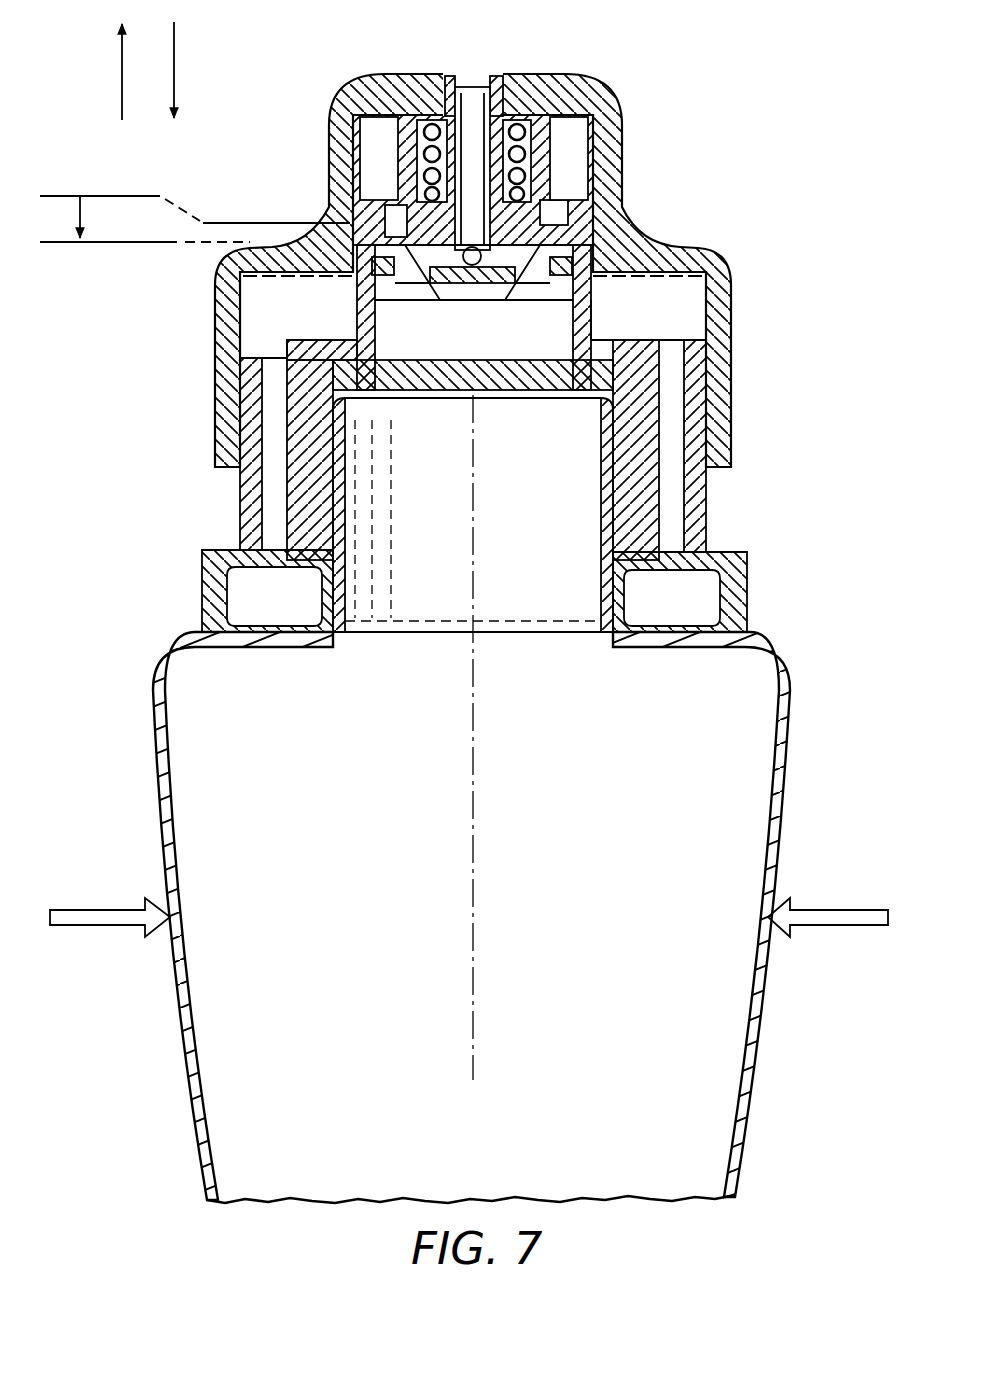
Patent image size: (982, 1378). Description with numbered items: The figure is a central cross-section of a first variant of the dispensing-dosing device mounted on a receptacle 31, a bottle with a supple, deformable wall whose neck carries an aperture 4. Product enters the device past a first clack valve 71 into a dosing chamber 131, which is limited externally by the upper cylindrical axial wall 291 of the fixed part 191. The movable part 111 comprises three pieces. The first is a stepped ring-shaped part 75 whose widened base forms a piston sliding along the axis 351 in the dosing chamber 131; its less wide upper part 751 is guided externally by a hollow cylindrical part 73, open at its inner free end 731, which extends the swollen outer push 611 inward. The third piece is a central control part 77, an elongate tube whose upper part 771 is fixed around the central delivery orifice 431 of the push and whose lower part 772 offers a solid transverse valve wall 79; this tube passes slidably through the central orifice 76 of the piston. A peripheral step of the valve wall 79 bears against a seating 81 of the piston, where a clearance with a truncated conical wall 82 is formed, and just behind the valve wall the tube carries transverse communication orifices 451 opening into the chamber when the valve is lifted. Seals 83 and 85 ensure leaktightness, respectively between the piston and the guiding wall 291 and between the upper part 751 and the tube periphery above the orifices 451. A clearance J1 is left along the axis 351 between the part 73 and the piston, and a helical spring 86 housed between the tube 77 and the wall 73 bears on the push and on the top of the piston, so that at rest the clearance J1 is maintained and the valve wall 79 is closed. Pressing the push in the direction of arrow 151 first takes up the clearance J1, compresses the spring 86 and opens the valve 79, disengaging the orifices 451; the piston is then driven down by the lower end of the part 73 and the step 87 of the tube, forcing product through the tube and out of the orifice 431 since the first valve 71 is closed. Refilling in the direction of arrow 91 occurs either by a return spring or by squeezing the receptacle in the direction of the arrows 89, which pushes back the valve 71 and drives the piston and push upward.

The receptacle 31 is at (153, 686).
The aperture 4 is at (465, 400).
The first clack valve 71 is at (488, 400).
The arrow (first movement direction) 91 is at (120, 79).
The movable part 111 is at (734, 254).
The dosing chamber 131 is at (398, 402).
The arrow (second movement direction) 151 is at (176, 79).
The fixed part 191 is at (308, 332).
The upper cylindrical axial wall 291 is at (597, 325).
The axis 351 is at (478, 818).
The central delivery orifice 431 is at (469, 86).
The communication orifices 451 is at (492, 96).
The outer push 611 is at (215, 362).
The hollow cylindrical part 73 is at (552, 156).
The inner free end 731 is at (590, 240).
The stepped ring-shaped part 75 is at (590, 300).
The upper part of the piston 751 is at (596, 266).
The central orifice 76 is at (598, 280).
The control part (tube) 77 is at (540, 140).
The upper part of the control part 771 is at (452, 88).
The lower part of the control part 772 is at (500, 290).
The valve wall 79 is at (440, 275).
The seating 81 is at (398, 252).
The truncated conical wall 82 is at (525, 275).
The seal 83 is at (372, 268).
The seal 85 is at (366, 200).
The helical spring 86 is at (542, 178).
The step 87 is at (524, 187).
The arrows (receptacle compression) 89 is at (96, 897).
The clearance J1 is at (84, 226).